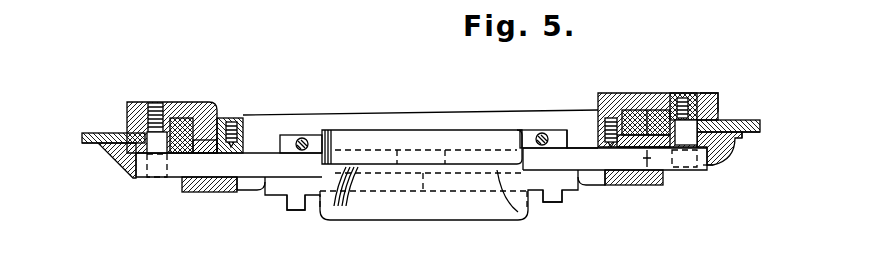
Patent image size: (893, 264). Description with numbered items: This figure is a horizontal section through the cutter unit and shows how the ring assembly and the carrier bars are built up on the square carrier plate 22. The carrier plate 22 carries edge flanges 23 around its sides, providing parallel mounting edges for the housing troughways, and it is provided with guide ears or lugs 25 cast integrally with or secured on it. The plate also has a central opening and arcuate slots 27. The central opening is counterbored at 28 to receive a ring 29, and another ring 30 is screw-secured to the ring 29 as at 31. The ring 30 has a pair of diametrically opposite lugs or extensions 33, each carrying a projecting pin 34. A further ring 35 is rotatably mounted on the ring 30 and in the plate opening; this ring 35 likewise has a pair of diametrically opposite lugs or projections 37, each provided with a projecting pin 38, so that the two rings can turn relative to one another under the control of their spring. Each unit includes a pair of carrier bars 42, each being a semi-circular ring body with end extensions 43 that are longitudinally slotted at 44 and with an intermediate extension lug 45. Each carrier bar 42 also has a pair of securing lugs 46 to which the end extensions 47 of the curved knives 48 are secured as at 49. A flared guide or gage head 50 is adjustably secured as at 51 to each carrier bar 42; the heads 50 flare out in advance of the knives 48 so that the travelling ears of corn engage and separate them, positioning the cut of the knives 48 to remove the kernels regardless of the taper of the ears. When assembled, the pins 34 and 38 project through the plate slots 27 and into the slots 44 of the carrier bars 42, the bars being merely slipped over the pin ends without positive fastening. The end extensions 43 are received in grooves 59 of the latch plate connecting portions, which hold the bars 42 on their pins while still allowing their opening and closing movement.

The carrier plate 22 is at (83, 142).
The edge flanges 23 is at (103, 150).
The guide ears or lugs 25 is at (119, 168).
The arcuate slots 27 is at (142, 144).
The counterbore 28 is at (692, 96).
The ring 29 is at (258, 143).
The ring 30 is at (237, 120).
The screws 31 is at (248, 117).
The lugs or extensions 33 is at (717, 94).
The projecting pin 34 is at (688, 132).
The ring 35 is at (196, 118).
The lugs or projections 37 is at (176, 103).
The projecting pin 38 is at (140, 185).
The carrier bars 42 is at (550, 149).
The end extensions 43 is at (588, 147).
The slots 44 is at (147, 190).
The intermediate extension lug 45 is at (420, 190).
The securing lugs 46 is at (277, 148).
The end extensions 47 is at (526, 138).
The curved knives 48 is at (403, 139).
The securing means 49 is at (538, 131).
The flared guide or gage head 50 is at (426, 210).
The adjustable securing means 51 is at (295, 206).
The grooves 59 is at (214, 193).